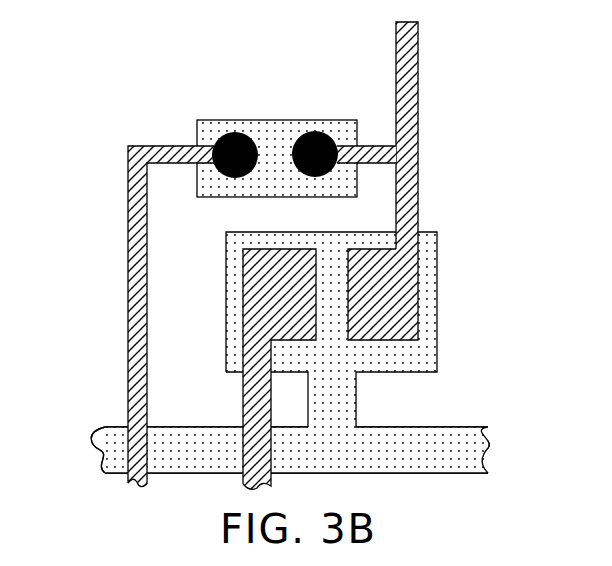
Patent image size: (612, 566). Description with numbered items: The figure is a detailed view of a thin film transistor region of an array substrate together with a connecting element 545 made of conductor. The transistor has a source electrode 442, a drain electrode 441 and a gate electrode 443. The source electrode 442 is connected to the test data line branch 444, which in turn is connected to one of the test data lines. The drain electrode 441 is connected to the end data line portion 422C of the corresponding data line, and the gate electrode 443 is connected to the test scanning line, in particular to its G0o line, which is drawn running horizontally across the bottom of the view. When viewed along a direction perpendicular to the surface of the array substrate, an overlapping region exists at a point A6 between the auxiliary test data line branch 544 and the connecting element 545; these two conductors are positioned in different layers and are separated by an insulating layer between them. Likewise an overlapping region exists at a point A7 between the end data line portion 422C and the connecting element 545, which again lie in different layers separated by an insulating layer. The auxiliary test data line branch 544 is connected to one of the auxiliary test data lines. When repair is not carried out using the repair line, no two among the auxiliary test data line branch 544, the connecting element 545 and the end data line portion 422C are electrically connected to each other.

The auxiliary test data line branch 544 is at (137, 334).
The connecting element 545 is at (338, 128).
The overlapping point A6 is at (216, 134).
The overlapping point A7 is at (298, 134).
The end data line portion 422C is at (418, 75).
The drain electrode 441 is at (398, 289).
The source electrode 442 is at (297, 298).
The gate electrode 443 is at (387, 358).
The test data line branch 444 is at (262, 395).
The GO0 line G0o is at (447, 450).